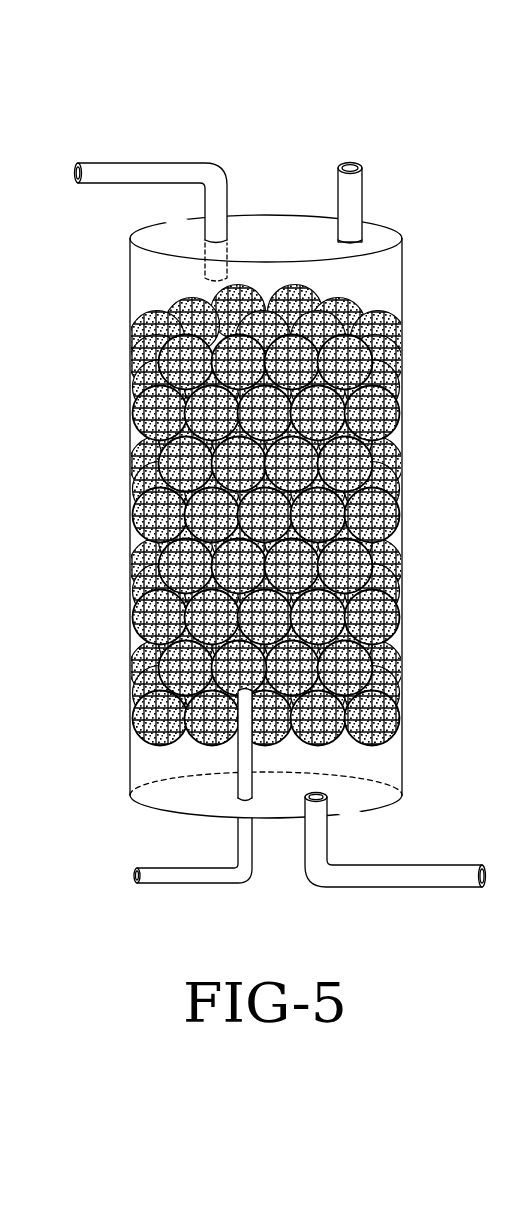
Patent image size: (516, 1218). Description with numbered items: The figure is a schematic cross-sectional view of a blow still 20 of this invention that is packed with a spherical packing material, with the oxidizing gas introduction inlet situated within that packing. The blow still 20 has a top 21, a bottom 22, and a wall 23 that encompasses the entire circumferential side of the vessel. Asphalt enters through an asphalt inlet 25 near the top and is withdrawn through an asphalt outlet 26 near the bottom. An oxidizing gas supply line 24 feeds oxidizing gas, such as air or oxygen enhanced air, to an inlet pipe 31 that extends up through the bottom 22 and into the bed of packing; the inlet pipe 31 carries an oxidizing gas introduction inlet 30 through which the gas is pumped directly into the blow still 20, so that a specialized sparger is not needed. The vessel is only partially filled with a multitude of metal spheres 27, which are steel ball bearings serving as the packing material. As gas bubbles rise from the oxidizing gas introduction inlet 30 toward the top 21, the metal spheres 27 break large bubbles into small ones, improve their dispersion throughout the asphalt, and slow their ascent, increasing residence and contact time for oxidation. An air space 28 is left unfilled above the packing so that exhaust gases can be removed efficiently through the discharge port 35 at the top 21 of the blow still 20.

The blow still 20 is at (178, 116).
The top 21 is at (293, 233).
The bottom 22 is at (365, 812).
The wall 23 is at (130, 565).
The oxidizing gas supply line 24 is at (195, 875).
The asphalt inlet 25 is at (145, 185).
The asphalt outlet 26 is at (355, 877).
The metal spheres 27 is at (170, 400).
The air space 28 is at (385, 293).
The oxidizing gas introduction inlet 30 is at (238, 697).
The inlet pipe 31 is at (243, 770).
The discharge port 35 is at (363, 208).